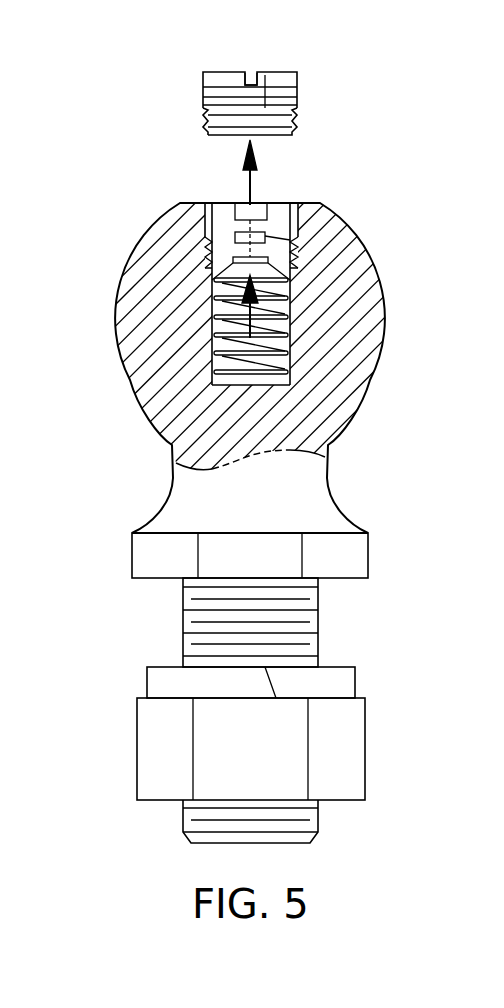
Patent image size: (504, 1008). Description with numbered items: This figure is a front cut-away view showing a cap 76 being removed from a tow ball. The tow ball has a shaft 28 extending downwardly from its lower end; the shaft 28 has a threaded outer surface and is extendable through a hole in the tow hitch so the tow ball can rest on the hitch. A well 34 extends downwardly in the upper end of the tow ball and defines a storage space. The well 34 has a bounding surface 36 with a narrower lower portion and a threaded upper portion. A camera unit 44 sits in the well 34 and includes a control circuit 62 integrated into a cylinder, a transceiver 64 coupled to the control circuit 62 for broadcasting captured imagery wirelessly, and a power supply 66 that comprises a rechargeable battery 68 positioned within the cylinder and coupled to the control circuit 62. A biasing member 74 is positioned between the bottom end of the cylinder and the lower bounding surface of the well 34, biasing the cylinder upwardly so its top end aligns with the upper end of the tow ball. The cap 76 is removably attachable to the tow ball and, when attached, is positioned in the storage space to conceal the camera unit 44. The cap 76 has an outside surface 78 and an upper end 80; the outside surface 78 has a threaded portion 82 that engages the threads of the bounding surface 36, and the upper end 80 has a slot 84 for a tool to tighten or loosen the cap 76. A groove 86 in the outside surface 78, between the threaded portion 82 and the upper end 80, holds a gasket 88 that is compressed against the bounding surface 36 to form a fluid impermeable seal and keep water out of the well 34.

The shaft 28 is at (320, 615).
The well 34 is at (163, 217).
The bounding surface 36 is at (292, 238).
The camera unit 44 is at (293, 272).
The control circuit 62 is at (233, 218).
The transceiver 64 is at (296, 240).
The power supply 66 is at (213, 270).
The rechargeable battery 68 is at (292, 345).
The biasing member 74 is at (215, 332).
The cap 76 is at (298, 72).
The outside surface 78 is at (296, 118).
The upper end 80 is at (222, 72).
The threaded portion 82 is at (167, 117).
The slot 84 is at (249, 46).
The groove 86 is at (290, 95).
The gasket 88 is at (265, 75).